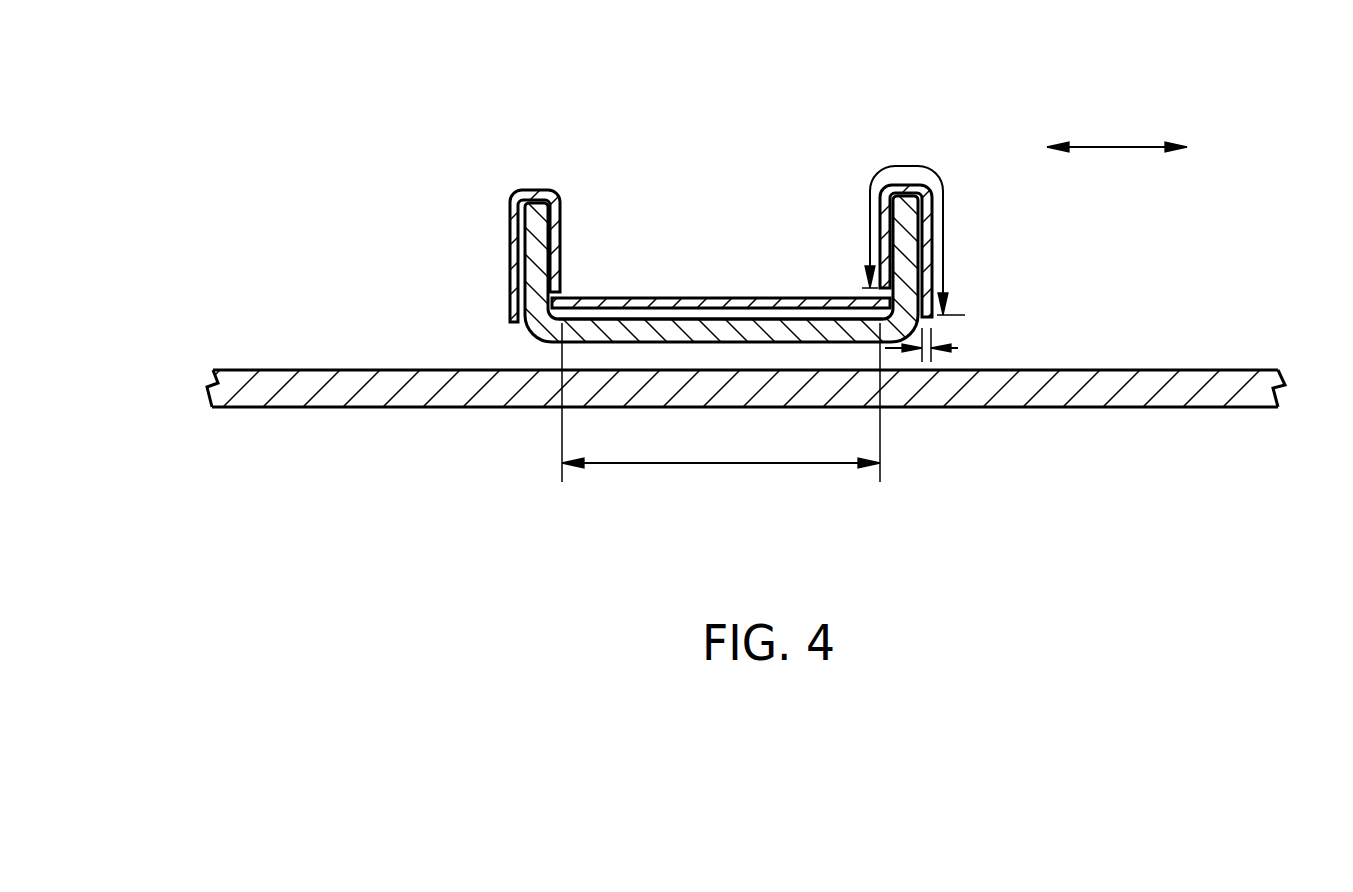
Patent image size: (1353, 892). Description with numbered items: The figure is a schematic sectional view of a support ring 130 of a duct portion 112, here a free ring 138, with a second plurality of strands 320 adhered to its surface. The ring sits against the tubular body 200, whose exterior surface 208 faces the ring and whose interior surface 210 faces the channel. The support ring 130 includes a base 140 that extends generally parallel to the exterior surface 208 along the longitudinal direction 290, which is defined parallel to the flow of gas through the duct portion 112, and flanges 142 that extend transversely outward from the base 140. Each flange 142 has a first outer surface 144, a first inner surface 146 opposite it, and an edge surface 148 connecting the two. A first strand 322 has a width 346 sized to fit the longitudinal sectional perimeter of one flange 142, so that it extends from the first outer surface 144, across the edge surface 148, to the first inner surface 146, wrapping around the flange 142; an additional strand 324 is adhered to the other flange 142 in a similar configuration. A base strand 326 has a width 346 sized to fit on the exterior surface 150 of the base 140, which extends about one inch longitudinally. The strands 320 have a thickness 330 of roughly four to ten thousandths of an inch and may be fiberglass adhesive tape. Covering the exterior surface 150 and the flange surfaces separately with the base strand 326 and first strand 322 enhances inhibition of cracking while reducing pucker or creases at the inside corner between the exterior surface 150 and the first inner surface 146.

The duct portion 112 is at (390, 215).
The support ring 130 is at (698, 276).
The free ring 138 is at (698, 276).
The base 140 is at (635, 343).
The flange 142 is at (535, 262).
The first outer surface 144 is at (518, 217).
The first inner surface 146 is at (555, 227).
The edge surface 148 is at (535, 196).
The exterior surface 150 is at (720, 277).
The tubular body 200 is at (700, 391).
The exterior surface 208 is at (1107, 371).
The interior surface 210 is at (1090, 408).
The longitudinal direction 290 is at (1117, 145).
The second plurality of strands 320 is at (721, 211).
The first strand 322 is at (536, 219).
The additional strand 324 is at (941, 188).
The base strand 326 is at (714, 298).
The thickness 330 is at (958, 347).
The width 346 is at (947, 198).